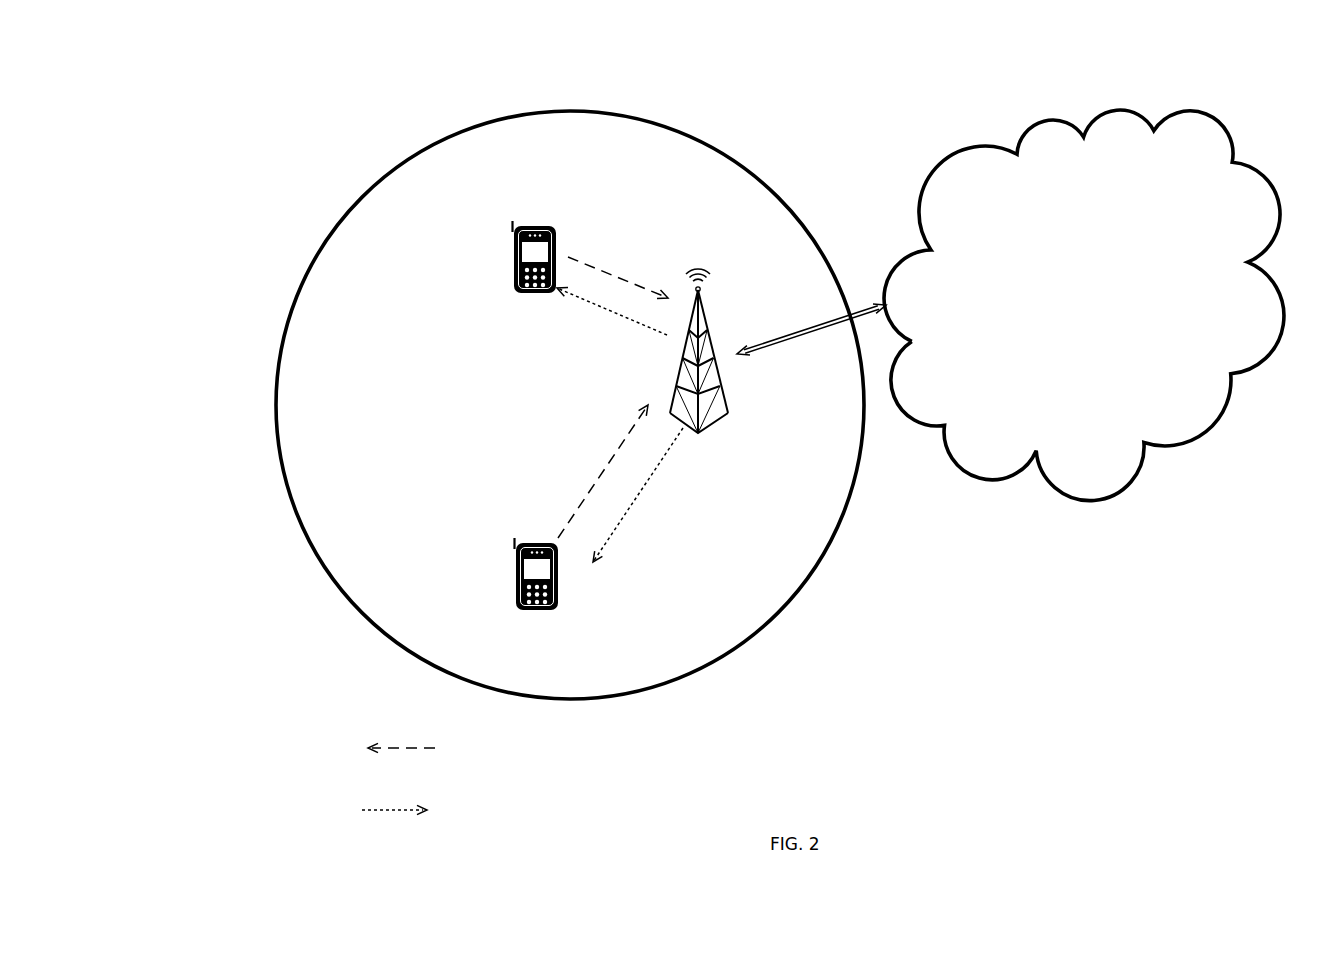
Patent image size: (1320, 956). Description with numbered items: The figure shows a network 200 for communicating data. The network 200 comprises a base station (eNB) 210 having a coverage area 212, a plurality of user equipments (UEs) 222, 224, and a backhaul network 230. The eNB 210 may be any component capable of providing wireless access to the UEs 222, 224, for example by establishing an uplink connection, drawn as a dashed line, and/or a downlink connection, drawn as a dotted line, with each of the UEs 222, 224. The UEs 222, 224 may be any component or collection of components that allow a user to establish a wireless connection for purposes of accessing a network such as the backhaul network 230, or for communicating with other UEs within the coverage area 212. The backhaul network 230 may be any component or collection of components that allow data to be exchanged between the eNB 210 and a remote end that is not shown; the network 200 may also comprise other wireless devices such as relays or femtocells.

The network 200 is at (283, 112).
The base station (eNB) 210 is at (700, 263).
The coverage area 212 is at (391, 478).
The user equipment (UE) 222 is at (540, 613).
The user equipment (UE) 224 is at (495, 258).
The backhaul network 230 is at (1190, 404).